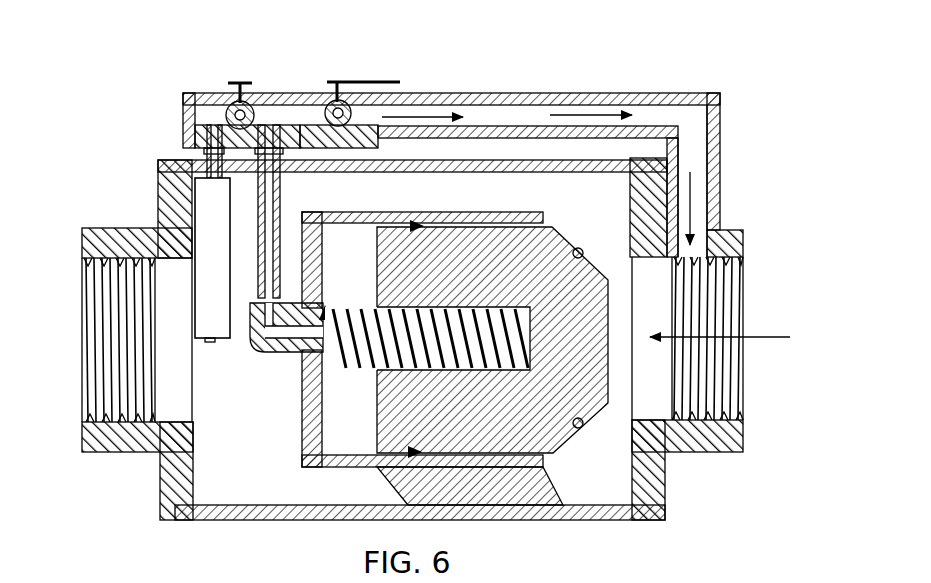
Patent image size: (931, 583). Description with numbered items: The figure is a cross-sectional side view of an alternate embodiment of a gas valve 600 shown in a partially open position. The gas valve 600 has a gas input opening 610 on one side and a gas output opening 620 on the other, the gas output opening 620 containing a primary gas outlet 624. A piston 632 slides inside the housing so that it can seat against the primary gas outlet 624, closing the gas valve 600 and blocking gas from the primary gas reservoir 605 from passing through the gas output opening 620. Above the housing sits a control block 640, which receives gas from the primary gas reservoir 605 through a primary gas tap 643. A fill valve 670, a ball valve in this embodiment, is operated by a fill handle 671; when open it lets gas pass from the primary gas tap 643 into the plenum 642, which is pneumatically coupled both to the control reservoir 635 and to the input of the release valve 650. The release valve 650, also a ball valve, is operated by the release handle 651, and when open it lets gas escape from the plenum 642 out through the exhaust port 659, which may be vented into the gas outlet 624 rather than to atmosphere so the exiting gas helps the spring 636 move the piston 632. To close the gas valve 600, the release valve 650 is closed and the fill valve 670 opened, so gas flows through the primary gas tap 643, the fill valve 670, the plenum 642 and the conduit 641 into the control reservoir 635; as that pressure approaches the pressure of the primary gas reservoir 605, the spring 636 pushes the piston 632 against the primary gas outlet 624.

The gas valve 600 is at (750, 103).
The primary gas reservoir 605 is at (248, 425).
The gas input opening 610 is at (72, 398).
The gas output opening 620 is at (748, 382).
The primary gas outlet 624 is at (741, 337).
The piston 632 is at (580, 247).
The control reservoir 635 is at (340, 435).
The spring 636 is at (485, 368).
The control block 640 is at (258, 95).
The conduit 641 is at (257, 212).
The plenum 642 is at (299, 104).
The primary gas tap 643 is at (197, 117).
The release valve 650 is at (356, 110).
The release handle 651 is at (341, 100).
The exhaust port 659 is at (690, 121).
The fill valve 670 is at (223, 97).
The fill handle 671 is at (241, 97).